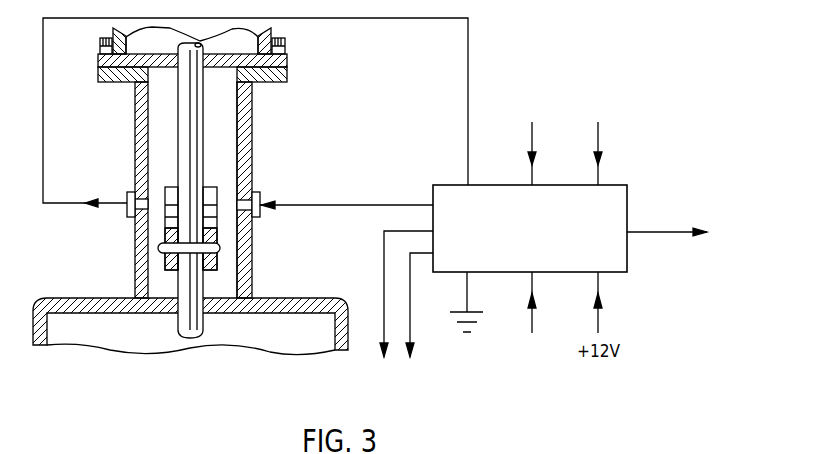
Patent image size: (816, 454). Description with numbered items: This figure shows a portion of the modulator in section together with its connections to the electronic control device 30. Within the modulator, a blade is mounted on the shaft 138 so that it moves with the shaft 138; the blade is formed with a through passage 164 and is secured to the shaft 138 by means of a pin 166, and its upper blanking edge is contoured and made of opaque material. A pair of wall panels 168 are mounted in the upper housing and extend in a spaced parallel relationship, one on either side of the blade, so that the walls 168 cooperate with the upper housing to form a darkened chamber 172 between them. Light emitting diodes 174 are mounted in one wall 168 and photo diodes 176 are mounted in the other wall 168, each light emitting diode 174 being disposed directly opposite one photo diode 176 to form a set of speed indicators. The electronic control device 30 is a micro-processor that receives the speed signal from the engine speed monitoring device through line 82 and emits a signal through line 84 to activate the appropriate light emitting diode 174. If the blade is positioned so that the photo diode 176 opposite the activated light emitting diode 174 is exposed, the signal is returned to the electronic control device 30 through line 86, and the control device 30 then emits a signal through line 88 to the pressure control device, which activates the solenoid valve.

The electronic control device 30 is at (540, 239).
The line 82 is at (530, 318).
The line 84 is at (355, 205).
The line 86 is at (65, 203).
The line 88 is at (655, 235).
The shaft 138 is at (185, 132).
The through passage 164 is at (165, 262).
The pin 166 is at (160, 247).
The wall panels 168 is at (137, 98).
The darkened chamber 172 is at (222, 137).
The light emitting diodes 174 is at (258, 193).
The photo diodes 176 is at (127, 195).